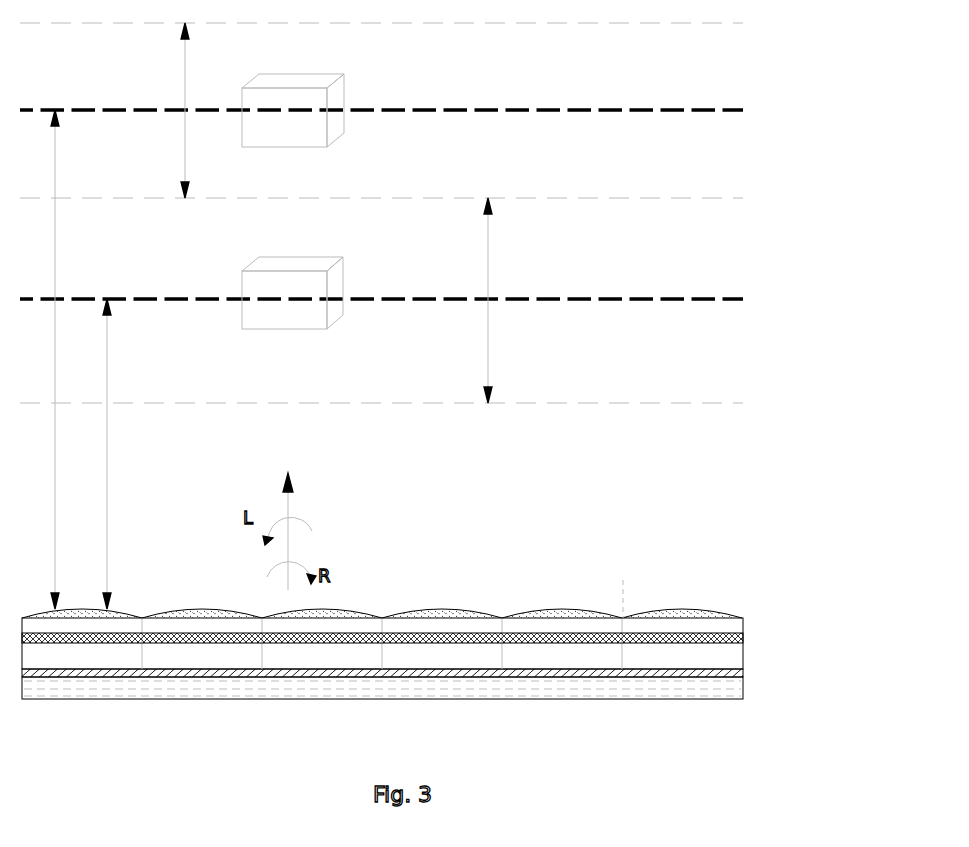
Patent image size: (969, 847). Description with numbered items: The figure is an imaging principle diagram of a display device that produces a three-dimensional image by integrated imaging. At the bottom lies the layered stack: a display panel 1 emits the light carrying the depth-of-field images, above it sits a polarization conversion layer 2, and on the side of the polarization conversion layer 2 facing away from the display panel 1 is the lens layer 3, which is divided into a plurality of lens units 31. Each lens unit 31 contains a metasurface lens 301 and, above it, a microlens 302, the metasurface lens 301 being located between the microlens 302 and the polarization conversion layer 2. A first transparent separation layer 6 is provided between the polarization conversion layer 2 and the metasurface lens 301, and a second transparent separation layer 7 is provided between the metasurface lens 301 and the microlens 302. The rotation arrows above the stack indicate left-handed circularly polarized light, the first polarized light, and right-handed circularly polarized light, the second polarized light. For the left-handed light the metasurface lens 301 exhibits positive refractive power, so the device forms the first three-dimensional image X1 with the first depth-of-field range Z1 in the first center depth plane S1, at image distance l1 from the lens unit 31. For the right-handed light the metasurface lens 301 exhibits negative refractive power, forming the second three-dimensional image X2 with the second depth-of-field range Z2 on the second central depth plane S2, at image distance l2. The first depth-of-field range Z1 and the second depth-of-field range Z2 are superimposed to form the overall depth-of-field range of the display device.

The display panel 1 is at (637, 700).
The polarization conversion layer 2 is at (744, 672).
The lens layer 3 is at (410, 602).
The lens unit 31 is at (650, 574).
The metasurface lens 301 is at (744, 638).
The microlens 302 is at (409, 576).
The first transparent separation layer 6 is at (547, 655).
The second transparent separation layer 7 is at (443, 623).
The first three-dimensional image X1 is at (344, 83).
The second three-dimensional image X2 is at (343, 271).
The first center depth plane S1 is at (397, 113).
The second central depth plane S2 is at (397, 302).
The first depth-of-field range Z1 is at (139, 130).
The second depth-of-field range Z2 is at (439, 253).
The image distance for imaging of the first polarized light l1 is at (42, 359).
The image distance for imaging of the second polarized light l2 is at (120, 454).